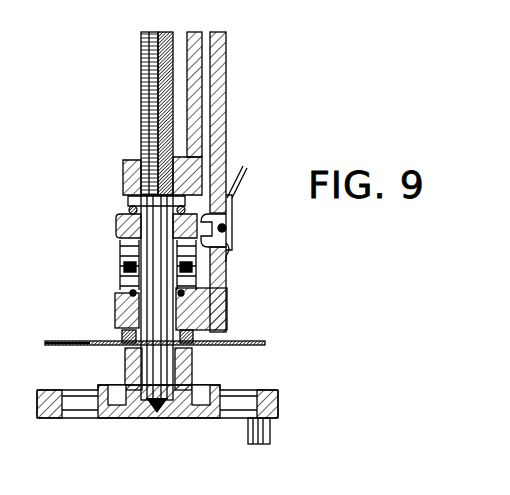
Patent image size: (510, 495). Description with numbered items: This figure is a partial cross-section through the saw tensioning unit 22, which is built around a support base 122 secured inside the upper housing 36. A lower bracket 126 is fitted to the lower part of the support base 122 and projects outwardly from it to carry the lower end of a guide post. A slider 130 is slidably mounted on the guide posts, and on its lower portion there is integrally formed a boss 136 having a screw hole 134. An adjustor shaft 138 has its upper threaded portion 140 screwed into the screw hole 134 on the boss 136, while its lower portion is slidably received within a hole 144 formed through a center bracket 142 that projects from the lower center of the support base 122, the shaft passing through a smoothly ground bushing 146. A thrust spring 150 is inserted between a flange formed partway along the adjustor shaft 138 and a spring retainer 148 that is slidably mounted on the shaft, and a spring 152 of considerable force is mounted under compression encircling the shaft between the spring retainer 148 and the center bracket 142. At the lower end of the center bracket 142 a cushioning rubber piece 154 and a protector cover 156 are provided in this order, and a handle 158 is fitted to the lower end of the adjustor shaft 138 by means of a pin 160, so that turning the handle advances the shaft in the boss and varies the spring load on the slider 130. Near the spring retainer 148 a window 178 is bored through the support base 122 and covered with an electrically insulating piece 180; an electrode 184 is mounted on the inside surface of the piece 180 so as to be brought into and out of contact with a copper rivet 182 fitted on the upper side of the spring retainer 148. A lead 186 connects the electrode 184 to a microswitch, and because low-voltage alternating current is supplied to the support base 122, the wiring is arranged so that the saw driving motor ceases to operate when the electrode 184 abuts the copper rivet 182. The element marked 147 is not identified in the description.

The saw tensioning unit 22 is at (283, 153).
The upper housing 36 is at (265, 343).
The support base 122 is at (218, 132).
The lower bracket 126 is at (127, 210).
The slider 130 is at (205, 84).
The screw hole 134 is at (157, 150).
The boss 136 is at (124, 176).
The adjustor shaft 138 is at (205, 322).
The upper threaded portion 140 is at (141, 118).
The center bracket 142 is at (115, 304).
The hole 144 is at (125, 320).
The bushing 146 is at (128, 296).
The flange 147 is at (122, 198).
The spring retainer 148 is at (119, 258).
The thrust spring 150 is at (116, 224).
The spring 152 is at (118, 274).
The cushioning rubber piece 154 is at (88, 342).
The protector cover 156 is at (122, 355).
The handle 158 is at (205, 418).
The pin 160 is at (185, 366).
The window 178 is at (232, 243).
The electrically insulating piece 180 is at (231, 256).
The copper rivet 182 is at (232, 211).
The electrode 184 is at (227, 237).
The lead 186 is at (242, 176).